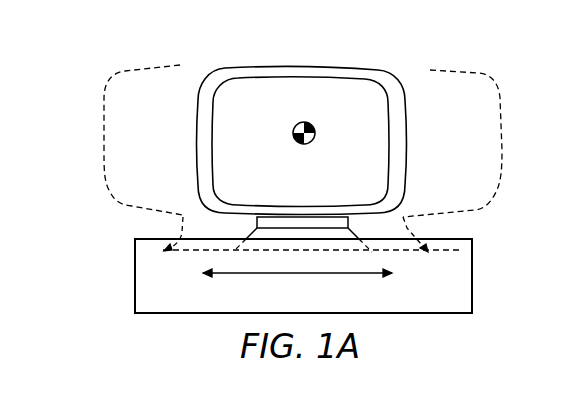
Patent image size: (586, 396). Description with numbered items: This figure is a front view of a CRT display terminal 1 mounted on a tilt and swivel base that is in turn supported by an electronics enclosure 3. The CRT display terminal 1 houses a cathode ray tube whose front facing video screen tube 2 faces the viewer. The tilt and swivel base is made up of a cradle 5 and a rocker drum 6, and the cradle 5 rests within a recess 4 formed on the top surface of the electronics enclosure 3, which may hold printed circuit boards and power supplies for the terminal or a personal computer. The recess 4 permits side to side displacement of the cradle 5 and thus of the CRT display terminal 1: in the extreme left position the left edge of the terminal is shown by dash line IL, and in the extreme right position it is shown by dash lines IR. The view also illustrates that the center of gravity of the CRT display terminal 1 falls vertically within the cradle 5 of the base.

The CRT display terminal 1 is at (386, 72).
The video screen tube 2 is at (322, 88).
The electronics enclosure 3 is at (472, 292).
The recess 4 is at (460, 250).
The cradle 5 is at (246, 234).
The rocker drum 6 is at (257, 222).
The dash line IL is at (110, 89).
The dash lines IR is at (497, 88).